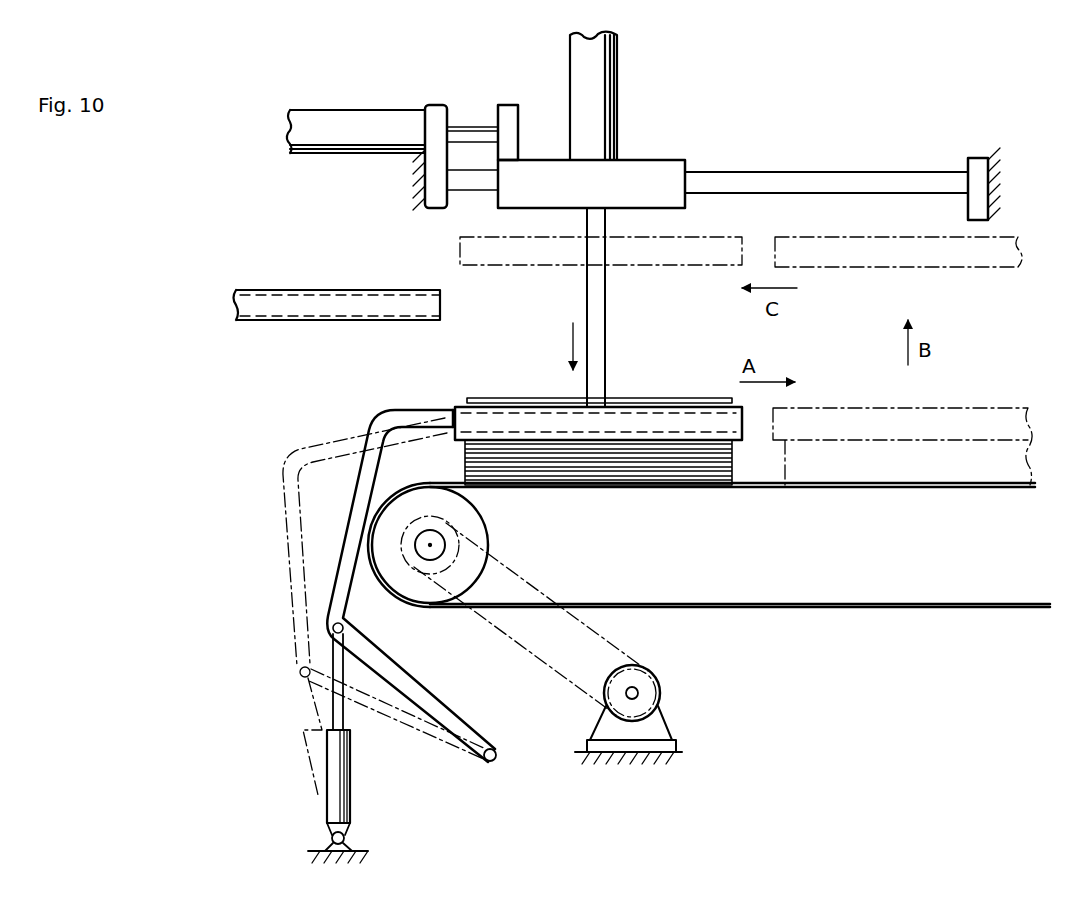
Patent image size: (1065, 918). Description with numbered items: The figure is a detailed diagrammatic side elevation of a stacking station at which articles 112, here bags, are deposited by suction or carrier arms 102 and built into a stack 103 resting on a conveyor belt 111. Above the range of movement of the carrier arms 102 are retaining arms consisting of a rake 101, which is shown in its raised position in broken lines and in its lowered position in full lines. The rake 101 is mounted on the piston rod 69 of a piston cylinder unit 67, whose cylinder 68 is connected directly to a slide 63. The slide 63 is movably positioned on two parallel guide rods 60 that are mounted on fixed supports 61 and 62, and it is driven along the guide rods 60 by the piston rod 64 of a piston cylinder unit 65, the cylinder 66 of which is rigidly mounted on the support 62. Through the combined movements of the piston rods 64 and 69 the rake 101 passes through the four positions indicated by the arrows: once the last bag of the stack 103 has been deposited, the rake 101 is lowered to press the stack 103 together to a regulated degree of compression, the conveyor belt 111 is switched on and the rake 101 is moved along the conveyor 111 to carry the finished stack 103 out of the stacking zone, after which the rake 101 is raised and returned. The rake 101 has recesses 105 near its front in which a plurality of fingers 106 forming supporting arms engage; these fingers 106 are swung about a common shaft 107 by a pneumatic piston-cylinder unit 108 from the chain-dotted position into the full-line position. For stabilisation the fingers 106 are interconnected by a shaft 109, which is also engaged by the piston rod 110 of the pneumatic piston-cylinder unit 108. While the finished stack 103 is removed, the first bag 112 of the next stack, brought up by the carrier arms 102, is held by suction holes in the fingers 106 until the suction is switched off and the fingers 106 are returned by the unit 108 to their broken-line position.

The guide rods 60 is at (820, 178).
The fixed support 61 is at (980, 198).
The fixed support 62 is at (433, 184).
The slide 63 is at (668, 167).
The piston rod 64 is at (479, 128).
The piston cylinder unit 65 is at (461, 108).
The cylinder 66 is at (347, 117).
The piston cylinder unit 67 is at (614, 224).
The cylinder 68 is at (600, 70).
The piston rod 69 is at (592, 297).
The rake 101 is at (633, 268).
The carrier arms 102 is at (283, 288).
The stack 103 is at (710, 466).
The recesses 105 is at (448, 404).
The fingers 106 is at (520, 415).
The shaft 107 is at (497, 755).
The pneumatic piston-cylinder unit 108 is at (332, 803).
The shaft 109 is at (346, 628).
The piston rod 110 is at (340, 710).
The conveyor belt 111 is at (668, 606).
The articles 112 is at (468, 398).